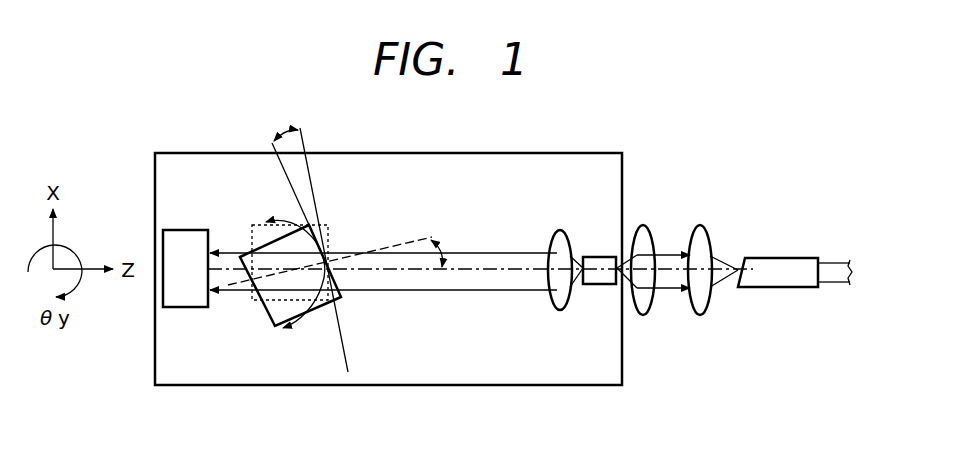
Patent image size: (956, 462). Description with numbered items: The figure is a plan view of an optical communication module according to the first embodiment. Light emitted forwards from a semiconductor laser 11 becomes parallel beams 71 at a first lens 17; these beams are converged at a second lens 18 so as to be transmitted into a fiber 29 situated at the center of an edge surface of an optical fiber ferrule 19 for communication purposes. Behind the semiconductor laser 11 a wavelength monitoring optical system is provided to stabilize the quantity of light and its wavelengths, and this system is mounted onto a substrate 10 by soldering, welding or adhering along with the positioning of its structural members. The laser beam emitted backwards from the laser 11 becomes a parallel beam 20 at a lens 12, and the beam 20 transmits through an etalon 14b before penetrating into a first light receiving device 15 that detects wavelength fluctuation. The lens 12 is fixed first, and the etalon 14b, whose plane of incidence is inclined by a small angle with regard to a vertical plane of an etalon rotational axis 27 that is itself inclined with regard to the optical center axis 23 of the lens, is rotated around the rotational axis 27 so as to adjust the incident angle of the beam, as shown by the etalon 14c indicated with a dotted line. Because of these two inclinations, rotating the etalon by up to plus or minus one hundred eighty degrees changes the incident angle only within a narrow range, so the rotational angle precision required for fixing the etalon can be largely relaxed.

The substrate 10 is at (205, 368).
The semiconductor laser 11 is at (594, 257).
The lens 12 is at (557, 232).
The etalon 14b is at (247, 253).
The etalon 14c is at (328, 225).
The first light receiving device 15 is at (185, 230).
The first lens 17 is at (645, 225).
The second lens 18 is at (705, 225).
The optical fiber ferrule 19 is at (782, 258).
The parallel beam 20 is at (485, 253).
The optical center axis 23 is at (523, 268).
The etalon rotational axis 27 is at (412, 240).
The fiber 29 is at (832, 263).
The parallel beams 71 is at (673, 293).